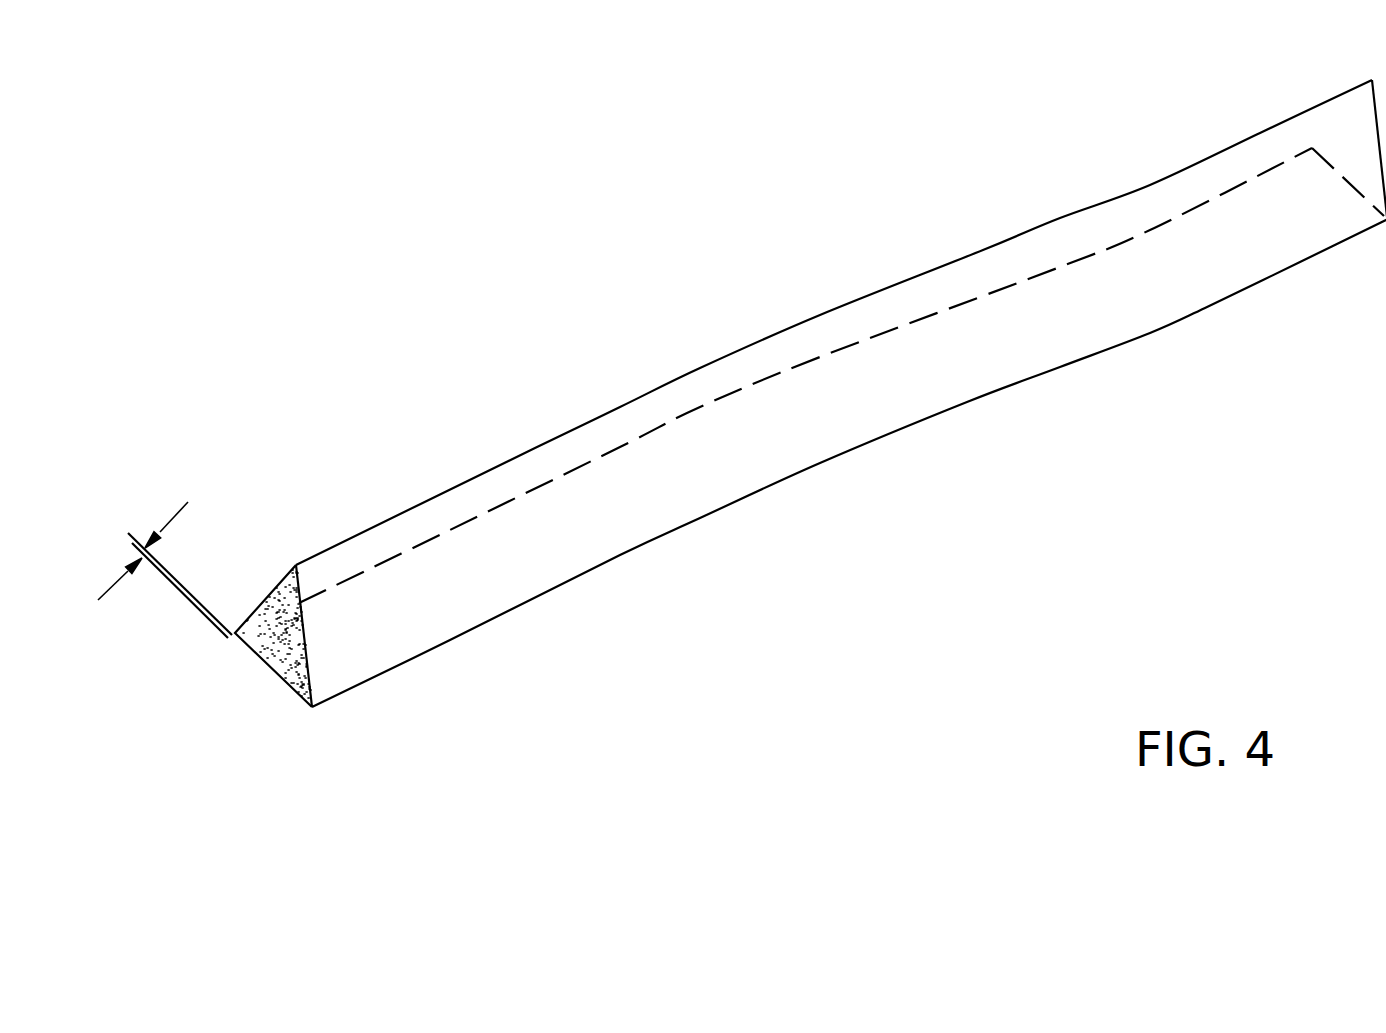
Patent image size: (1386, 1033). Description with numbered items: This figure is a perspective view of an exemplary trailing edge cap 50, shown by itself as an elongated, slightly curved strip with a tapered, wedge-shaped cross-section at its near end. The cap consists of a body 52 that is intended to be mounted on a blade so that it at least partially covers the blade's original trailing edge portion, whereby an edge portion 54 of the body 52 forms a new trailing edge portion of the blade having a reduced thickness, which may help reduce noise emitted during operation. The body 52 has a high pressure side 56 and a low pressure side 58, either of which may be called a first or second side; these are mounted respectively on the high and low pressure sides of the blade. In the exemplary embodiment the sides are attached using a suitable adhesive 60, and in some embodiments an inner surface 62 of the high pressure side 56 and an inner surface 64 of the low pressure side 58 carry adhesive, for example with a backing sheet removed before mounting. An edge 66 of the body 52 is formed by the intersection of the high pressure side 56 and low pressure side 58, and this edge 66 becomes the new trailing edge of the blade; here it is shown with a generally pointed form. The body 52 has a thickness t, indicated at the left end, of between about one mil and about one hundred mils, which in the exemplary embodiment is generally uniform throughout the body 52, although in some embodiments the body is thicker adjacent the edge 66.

The trailing edge cap 50 is at (742, 422).
The body 52 is at (580, 600).
The edge portion 54 is at (841, 393).
The high pressure side 56 is at (268, 630).
The low pressure side 58 is at (1205, 277).
The adhesive 60 is at (255, 640).
The inner surface of high pressure side 62 is at (283, 623).
The inner surface of low pressure side 64 is at (535, 447).
The edge 66 is at (969, 420).